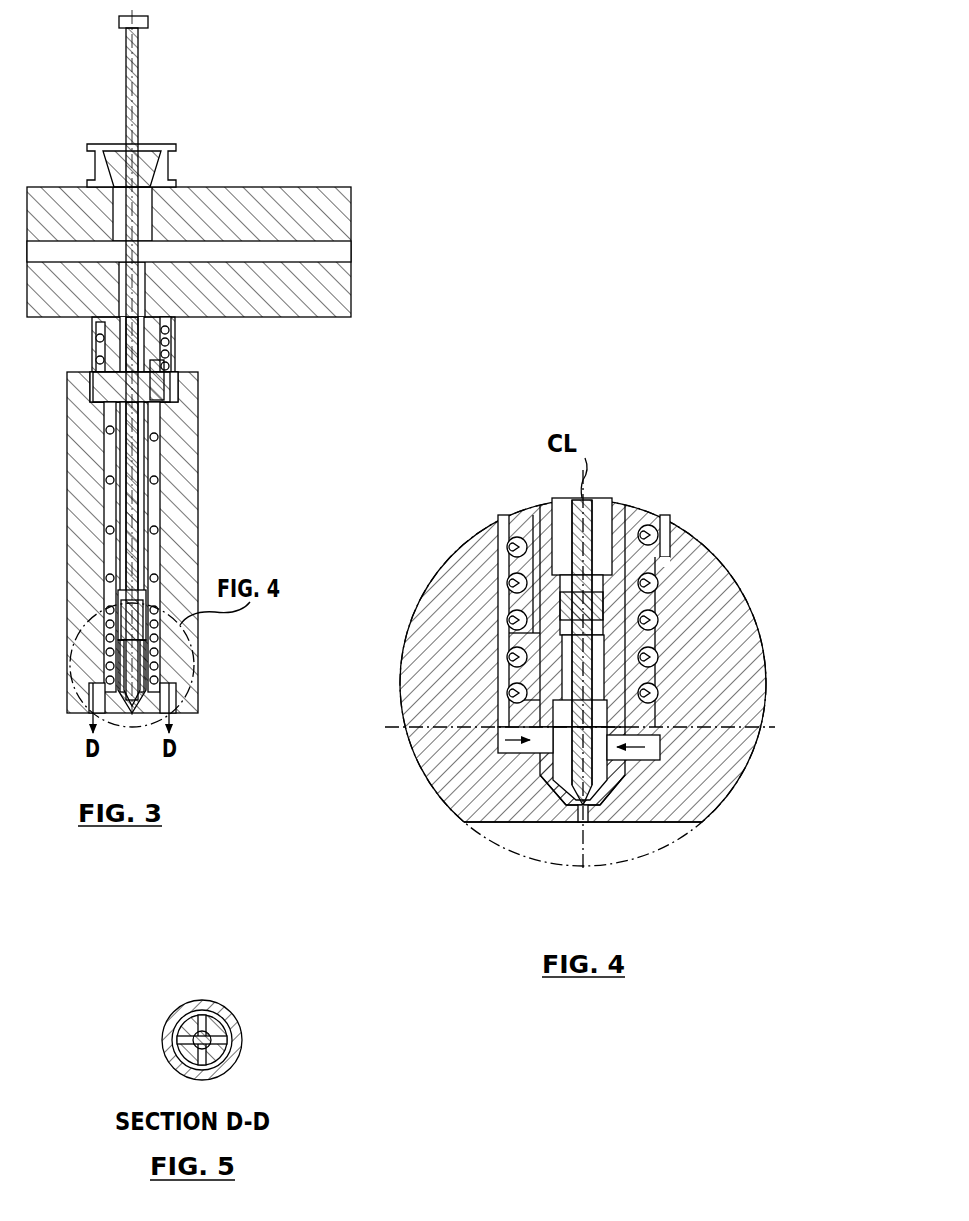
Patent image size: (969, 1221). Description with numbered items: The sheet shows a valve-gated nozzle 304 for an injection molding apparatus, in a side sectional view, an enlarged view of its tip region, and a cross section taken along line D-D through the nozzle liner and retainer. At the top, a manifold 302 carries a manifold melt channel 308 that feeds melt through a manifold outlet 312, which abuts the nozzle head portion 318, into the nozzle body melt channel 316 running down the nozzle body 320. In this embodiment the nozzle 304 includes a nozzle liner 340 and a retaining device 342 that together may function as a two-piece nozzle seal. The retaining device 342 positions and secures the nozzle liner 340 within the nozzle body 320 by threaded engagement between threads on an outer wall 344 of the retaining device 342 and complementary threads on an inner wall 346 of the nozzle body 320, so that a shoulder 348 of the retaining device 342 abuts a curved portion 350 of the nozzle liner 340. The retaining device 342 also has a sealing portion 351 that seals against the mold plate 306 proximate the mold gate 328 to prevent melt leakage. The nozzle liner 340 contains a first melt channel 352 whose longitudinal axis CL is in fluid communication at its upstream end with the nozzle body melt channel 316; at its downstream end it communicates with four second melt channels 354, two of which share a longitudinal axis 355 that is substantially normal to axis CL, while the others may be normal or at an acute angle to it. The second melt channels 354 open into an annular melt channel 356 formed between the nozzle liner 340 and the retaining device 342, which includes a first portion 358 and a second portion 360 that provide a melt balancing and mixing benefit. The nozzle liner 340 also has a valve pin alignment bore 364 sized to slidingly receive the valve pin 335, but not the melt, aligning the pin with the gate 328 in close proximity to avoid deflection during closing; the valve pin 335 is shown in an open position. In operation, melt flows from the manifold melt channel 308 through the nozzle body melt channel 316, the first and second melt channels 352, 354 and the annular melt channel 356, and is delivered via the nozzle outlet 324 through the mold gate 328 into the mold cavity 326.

In FIG. 3, the manifold 302 is at (287, 187).
In FIG. 3, the valve-gated nozzle 304 is at (165, 428).
In FIG. 4, the valve-gated nozzle 304 is at (548, 505).
In FIG. 4, the mold plate 306 is at (735, 665).
In FIG. 3, the manifold melt channel 308 is at (348, 256).
In FIG. 3, the manifold outlet 312 is at (160, 318).
In FIG. 3, the nozzle body melt channel 316 is at (146, 468).
In FIG. 4, the nozzle body melt channel 316 is at (603, 505).
In FIG. 3, the nozzle head portion 318 is at (158, 365).
In FIG. 3, the nozzle body 320 is at (152, 505).
In FIG. 4, the nozzle body 320 is at (622, 512).
In FIG. 3, the nozzle outlet 324 is at (132, 713).
In FIG. 4, the mold cavity 326 is at (505, 835).
In FIG. 4, the mold gate 328 is at (590, 822).
In FIG. 3, the valve pin 335 is at (138, 68).
In FIG. 4, the valve pin 335 is at (584, 498).
In FIG. 5, the valve pin 335 is at (190, 1040).
In FIG. 3, the nozzle liner 340 is at (160, 672).
In FIG. 4, the nozzle liner 340 is at (522, 590).
In FIG. 4, the retaining device 342 is at (540, 793).
In FIG. 5, the retaining device 342 is at (228, 1062).
In FIG. 4, the outer wall 344 is at (505, 690).
In FIG. 4, the inner wall 346 is at (505, 712).
In FIG. 4, the shoulder 348 is at (533, 678).
In FIG. 4, the curved portion 350 is at (530, 645).
In FIG. 4, the sealing portion 351 is at (520, 797).
In FIG. 4, the first melt channel 352 is at (640, 660).
In FIG. 4, the second melt channels 354 is at (655, 718).
In FIG. 5, the second melt channels 354 is at (204, 1020).
In FIG. 4, the longitudinal axis 355 is at (440, 730).
In FIG. 4, the annular melt channel 356 is at (625, 768).
In FIG. 5, the annular melt channel 356 is at (233, 1036).
In FIG. 4, the first portion 358 is at (680, 740).
In FIG. 4, the second portion 360 is at (625, 805).
In FIG. 4, the valve pin alignment bore 364 is at (568, 815).